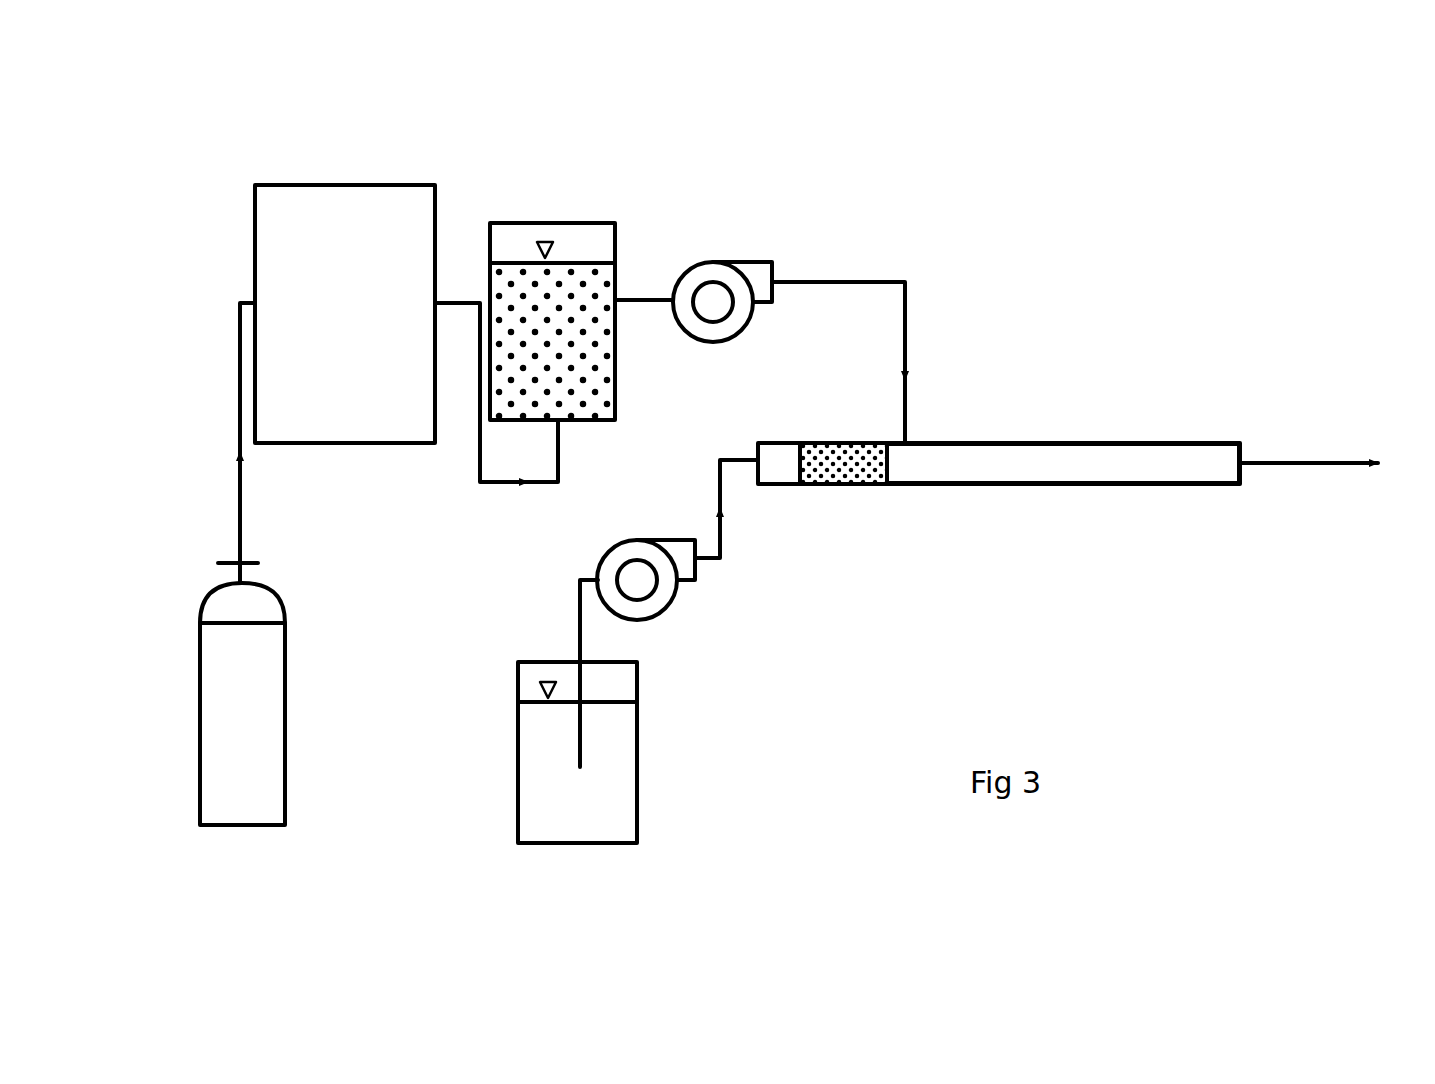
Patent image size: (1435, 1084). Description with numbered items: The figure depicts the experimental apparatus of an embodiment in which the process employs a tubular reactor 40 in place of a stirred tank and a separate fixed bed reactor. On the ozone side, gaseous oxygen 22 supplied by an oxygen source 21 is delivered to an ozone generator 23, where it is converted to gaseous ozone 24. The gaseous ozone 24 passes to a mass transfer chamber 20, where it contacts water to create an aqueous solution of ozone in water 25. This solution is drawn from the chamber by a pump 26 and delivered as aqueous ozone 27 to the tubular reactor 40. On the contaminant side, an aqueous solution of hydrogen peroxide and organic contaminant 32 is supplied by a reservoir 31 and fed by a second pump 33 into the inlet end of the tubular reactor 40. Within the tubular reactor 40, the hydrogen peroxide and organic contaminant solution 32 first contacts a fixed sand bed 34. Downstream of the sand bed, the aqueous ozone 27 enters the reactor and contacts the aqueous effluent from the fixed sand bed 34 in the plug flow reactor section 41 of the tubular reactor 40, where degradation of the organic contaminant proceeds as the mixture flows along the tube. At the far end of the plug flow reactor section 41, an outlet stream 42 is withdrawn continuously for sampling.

The mass transfer chamber 20 is at (587, 192).
The oxygen source 21 is at (290, 784).
The gaseous oxygen 22 is at (228, 515).
The ozone generator 23 is at (382, 146).
The gaseous ozone 24 is at (478, 470).
The aqueous solution of ozone in water 25 is at (639, 306).
The pump 26 is at (728, 260).
The aqueous ozone 27 is at (900, 394).
The reservoir 31 is at (645, 826).
The aqueous solution of hydrogen peroxide and organic contaminant 32 is at (574, 640).
The pump 33 is at (655, 620).
The fixed sand bed 34 is at (842, 468).
The tubular reactor 40 is at (999, 507).
The plug flow reactor section 41 is at (1186, 466).
The outlet stream 42 is at (1320, 455).